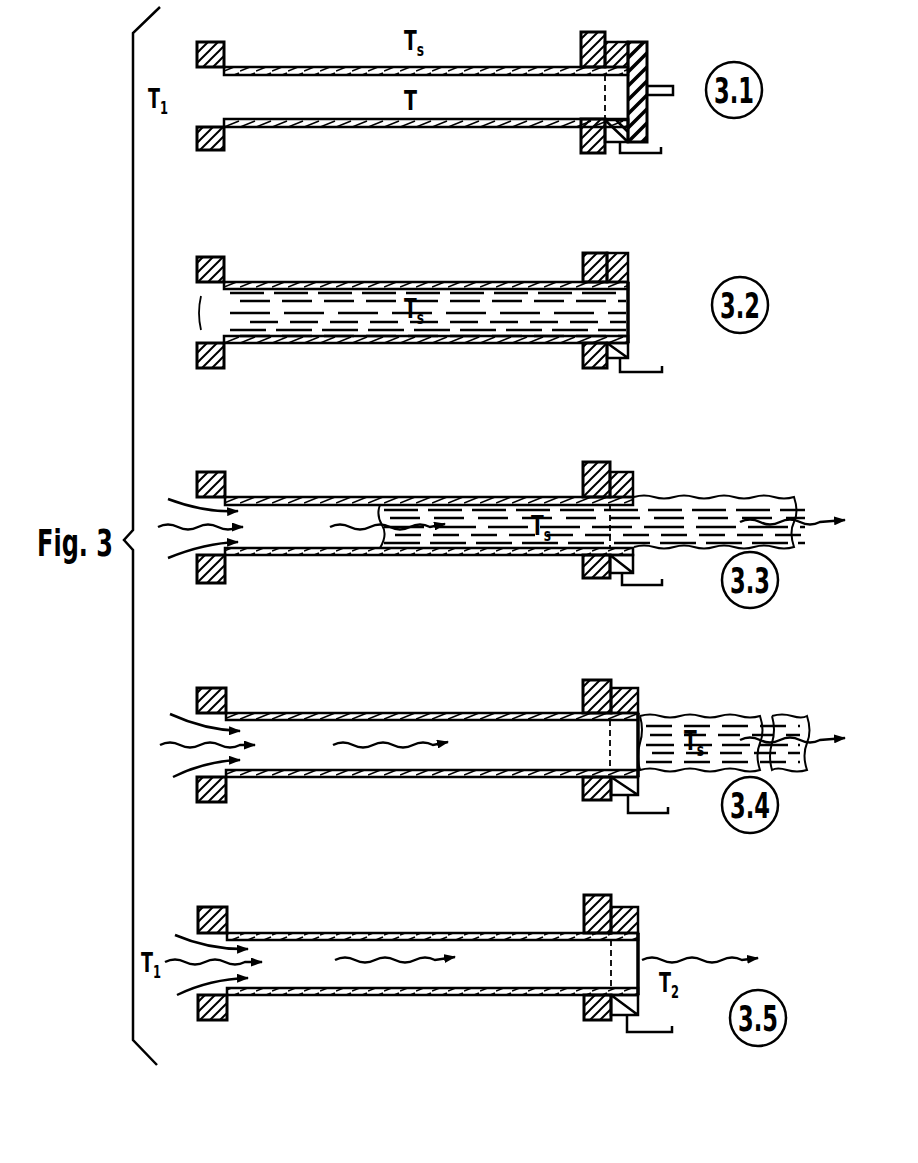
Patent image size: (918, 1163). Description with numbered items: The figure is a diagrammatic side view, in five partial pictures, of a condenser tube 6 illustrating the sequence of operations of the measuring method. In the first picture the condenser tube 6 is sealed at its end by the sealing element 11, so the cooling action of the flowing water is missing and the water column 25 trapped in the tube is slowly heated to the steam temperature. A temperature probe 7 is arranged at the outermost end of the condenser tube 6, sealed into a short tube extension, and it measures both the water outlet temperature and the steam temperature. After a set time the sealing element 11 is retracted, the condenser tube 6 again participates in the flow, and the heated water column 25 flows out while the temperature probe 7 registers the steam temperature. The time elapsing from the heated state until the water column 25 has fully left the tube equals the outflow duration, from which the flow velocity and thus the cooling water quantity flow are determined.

The condenser tube 6 is at (292, 68).
The temperature probe 7 is at (646, 134).
The sealing element 11 is at (644, 54).
The water column 25 is at (509, 321).